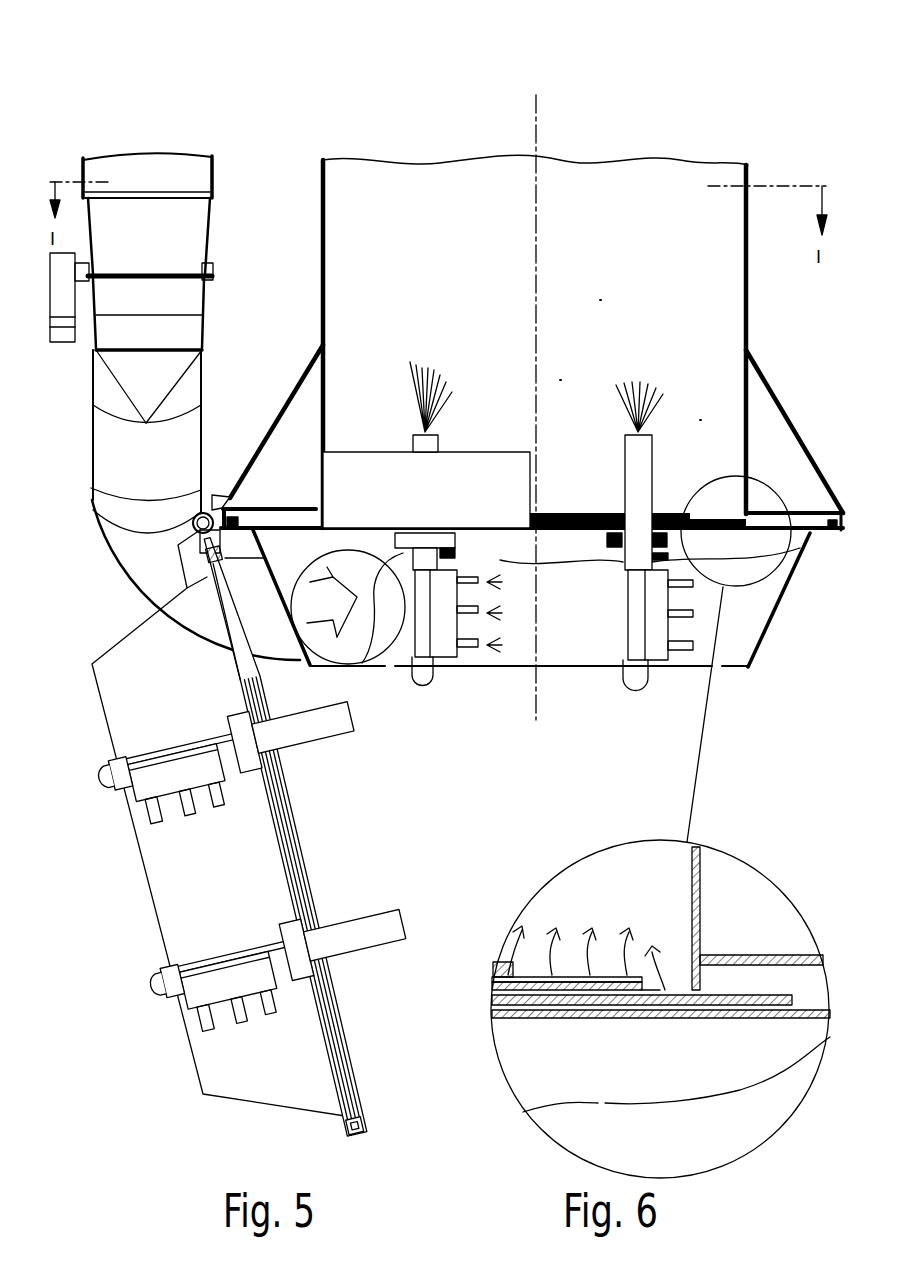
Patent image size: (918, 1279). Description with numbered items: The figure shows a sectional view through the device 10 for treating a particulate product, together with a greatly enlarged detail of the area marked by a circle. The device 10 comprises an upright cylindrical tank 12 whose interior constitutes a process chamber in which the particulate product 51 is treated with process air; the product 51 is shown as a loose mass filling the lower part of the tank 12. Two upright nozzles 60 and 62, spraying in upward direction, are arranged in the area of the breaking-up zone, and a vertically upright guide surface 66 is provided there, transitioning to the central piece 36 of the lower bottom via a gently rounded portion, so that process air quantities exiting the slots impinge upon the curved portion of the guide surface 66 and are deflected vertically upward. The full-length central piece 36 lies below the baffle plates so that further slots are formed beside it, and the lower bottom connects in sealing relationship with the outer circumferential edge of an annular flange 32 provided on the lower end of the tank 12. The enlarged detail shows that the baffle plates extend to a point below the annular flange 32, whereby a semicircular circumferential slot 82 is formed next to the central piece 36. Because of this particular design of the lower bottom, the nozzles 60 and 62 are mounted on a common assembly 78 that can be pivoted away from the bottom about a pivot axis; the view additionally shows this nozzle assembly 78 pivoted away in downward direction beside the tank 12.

In FIG. 5, the device 10 is at (730, 104).
In FIG. 5, the upright cylindrical tank 12 is at (750, 297).
In FIG. 5, the particulate product 51 is at (590, 328).
In FIG. 5, the upright nozzle 60 is at (648, 455).
In FIG. 5, the upright nozzle 62 is at (412, 436).
In FIG. 5, the guide surface 66 is at (477, 478).
In FIG. 5, the common assembly 78 is at (760, 675).
In FIG. 6, the annular flange 32 is at (747, 957).
In FIG. 6, the central piece 36 is at (710, 1019).
In FIG. 6, the semicircular circumferential slot 82 is at (662, 990).